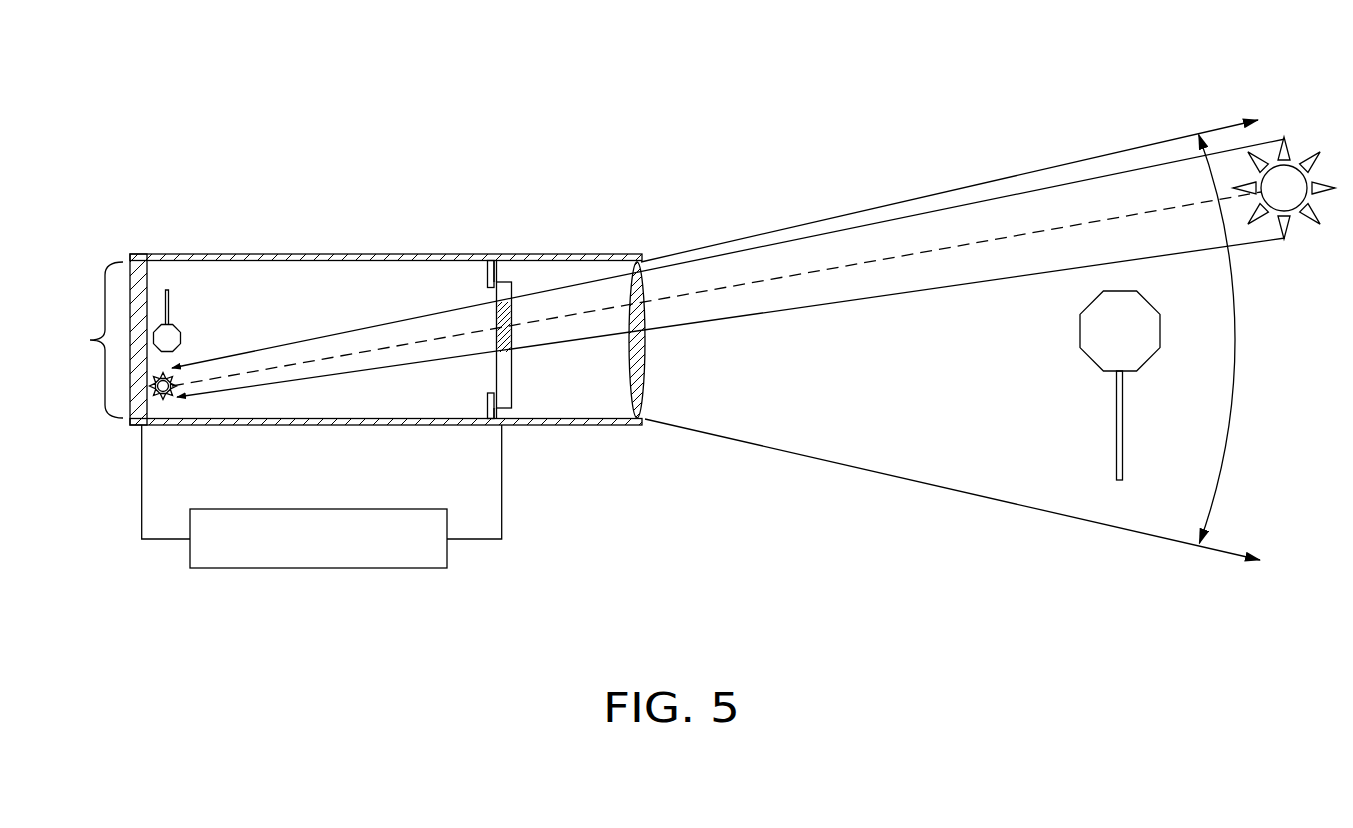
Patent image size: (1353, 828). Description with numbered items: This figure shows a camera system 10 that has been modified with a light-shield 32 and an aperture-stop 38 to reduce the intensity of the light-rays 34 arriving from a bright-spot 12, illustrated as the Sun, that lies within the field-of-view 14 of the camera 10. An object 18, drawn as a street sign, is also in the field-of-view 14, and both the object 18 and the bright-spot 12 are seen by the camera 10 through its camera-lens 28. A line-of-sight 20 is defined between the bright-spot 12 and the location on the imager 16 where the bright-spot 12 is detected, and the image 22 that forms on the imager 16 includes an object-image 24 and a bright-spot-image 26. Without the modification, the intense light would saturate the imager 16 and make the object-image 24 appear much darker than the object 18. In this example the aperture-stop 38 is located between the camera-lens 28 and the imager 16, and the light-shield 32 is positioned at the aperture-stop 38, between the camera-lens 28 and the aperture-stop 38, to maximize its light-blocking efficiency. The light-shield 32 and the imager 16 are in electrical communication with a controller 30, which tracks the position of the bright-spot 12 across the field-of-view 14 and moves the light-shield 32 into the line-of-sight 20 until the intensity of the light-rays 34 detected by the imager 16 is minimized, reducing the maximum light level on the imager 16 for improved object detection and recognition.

The camera system 10 is at (328, 162).
The bright-spot 12 is at (1295, 162).
The field-of-view 14 is at (1221, 478).
The imager 16 is at (131, 423).
The object 18 is at (1086, 355).
The line-of-sight 20 is at (1025, 232).
The image 22 is at (91, 340).
The object-image 24 is at (174, 334).
The bright-spot-image 26 is at (161, 400).
The camera-lens 28 is at (631, 273).
The controller 30 is at (448, 552).
The light-shield 32 is at (512, 392).
The light-rays 34 is at (927, 288).
The aperture-stop 38 is at (489, 273).